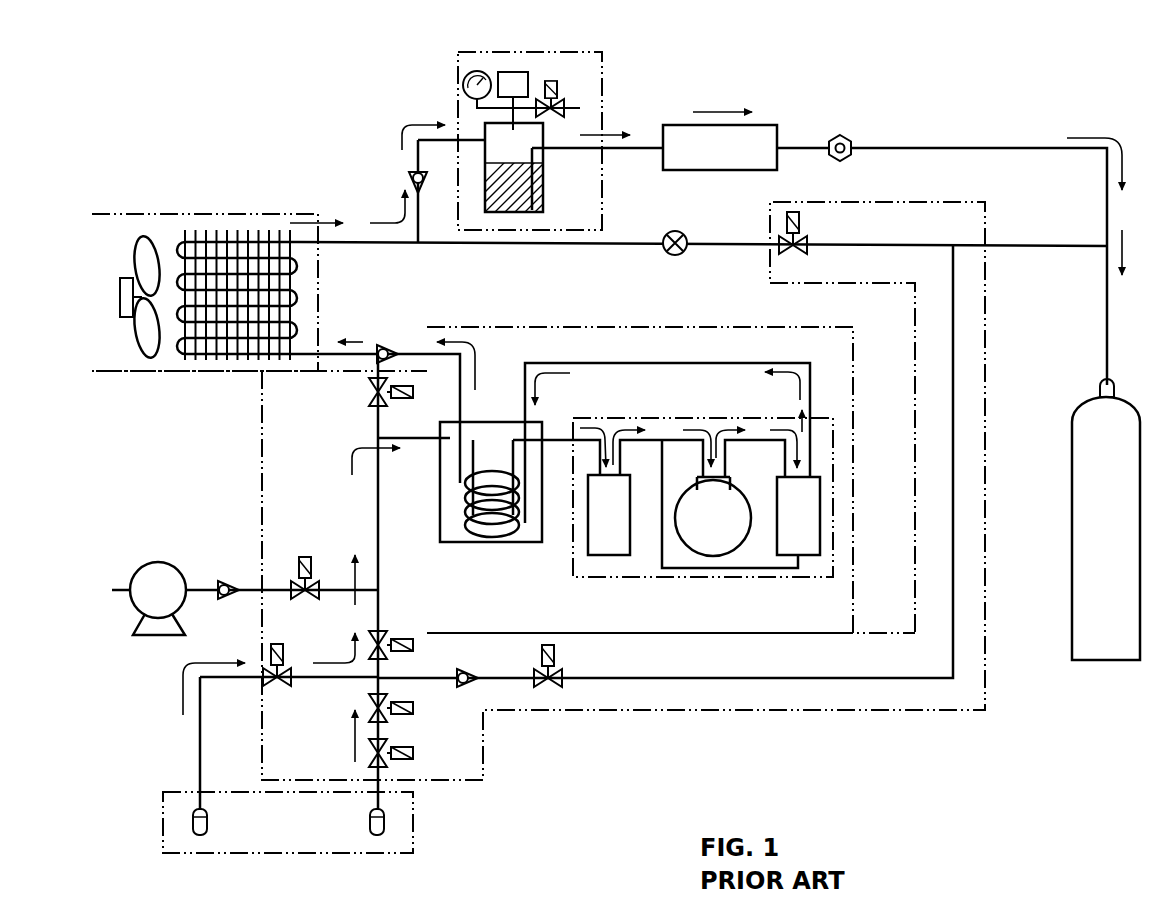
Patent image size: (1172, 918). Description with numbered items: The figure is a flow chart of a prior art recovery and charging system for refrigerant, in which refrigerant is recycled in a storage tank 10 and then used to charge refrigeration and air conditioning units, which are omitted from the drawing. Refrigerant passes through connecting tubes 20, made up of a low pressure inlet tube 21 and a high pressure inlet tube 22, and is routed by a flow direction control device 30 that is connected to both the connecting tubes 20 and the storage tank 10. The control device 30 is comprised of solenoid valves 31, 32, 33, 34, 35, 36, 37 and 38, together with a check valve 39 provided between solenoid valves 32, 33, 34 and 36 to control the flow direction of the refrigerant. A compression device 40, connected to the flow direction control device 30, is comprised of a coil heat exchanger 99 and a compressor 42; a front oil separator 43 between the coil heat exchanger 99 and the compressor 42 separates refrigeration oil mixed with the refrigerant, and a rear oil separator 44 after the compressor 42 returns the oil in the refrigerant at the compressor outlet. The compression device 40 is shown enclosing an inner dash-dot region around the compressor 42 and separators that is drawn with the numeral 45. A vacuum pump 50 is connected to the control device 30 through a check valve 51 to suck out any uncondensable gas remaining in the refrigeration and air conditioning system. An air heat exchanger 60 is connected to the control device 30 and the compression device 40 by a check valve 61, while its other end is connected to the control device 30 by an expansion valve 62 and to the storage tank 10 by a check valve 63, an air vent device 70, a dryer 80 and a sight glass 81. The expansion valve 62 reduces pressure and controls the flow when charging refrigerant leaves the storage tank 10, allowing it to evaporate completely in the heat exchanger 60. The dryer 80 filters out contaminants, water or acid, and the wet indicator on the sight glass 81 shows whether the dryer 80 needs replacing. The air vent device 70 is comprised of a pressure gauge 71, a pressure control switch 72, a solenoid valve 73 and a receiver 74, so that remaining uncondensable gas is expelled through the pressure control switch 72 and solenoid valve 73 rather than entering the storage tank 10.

The storage tank 10 is at (1072, 583).
The connecting tubes 20 is at (413, 812).
The low pressure inlet tube 21 is at (207, 823).
The high pressure inlet tube 22 is at (367, 823).
The flow direction control device 30 is at (638, 712).
The solenoid valve 31 is at (412, 752).
The solenoid valve 32 is at (413, 710).
The solenoid valve 33 is at (280, 684).
The solenoid valve 34 is at (412, 646).
The solenoid valve 35 is at (300, 558).
The solenoid valve 36 is at (560, 655).
The solenoid valve 37 is at (802, 224).
The solenoid valve 38 is at (365, 394).
The check valve 39 is at (475, 676).
The compression device 40 is at (677, 325).
The compressor 42 is at (745, 500).
The front oil separator 43 is at (625, 490).
The rear oil separator 44 is at (820, 515).
The thermostatic chamber 45 is at (688, 577).
The vacuum pump 50 is at (140, 572).
The check valve 51 is at (230, 580).
The air heat exchanger 60 is at (200, 372).
The check valve 61 is at (387, 345).
The expansion valve 62 is at (678, 231).
The check valve 63 is at (409, 177).
The air vent device 70 is at (602, 52).
The pressure gauge 71 is at (466, 74).
The pressure control switch 72 is at (507, 72).
The solenoid valve 73 is at (560, 90).
The receiver 74 is at (545, 213).
The dryer 80 is at (772, 125).
The sight glass 81 is at (842, 135).
The coil heat exchanger 99 is at (508, 542).